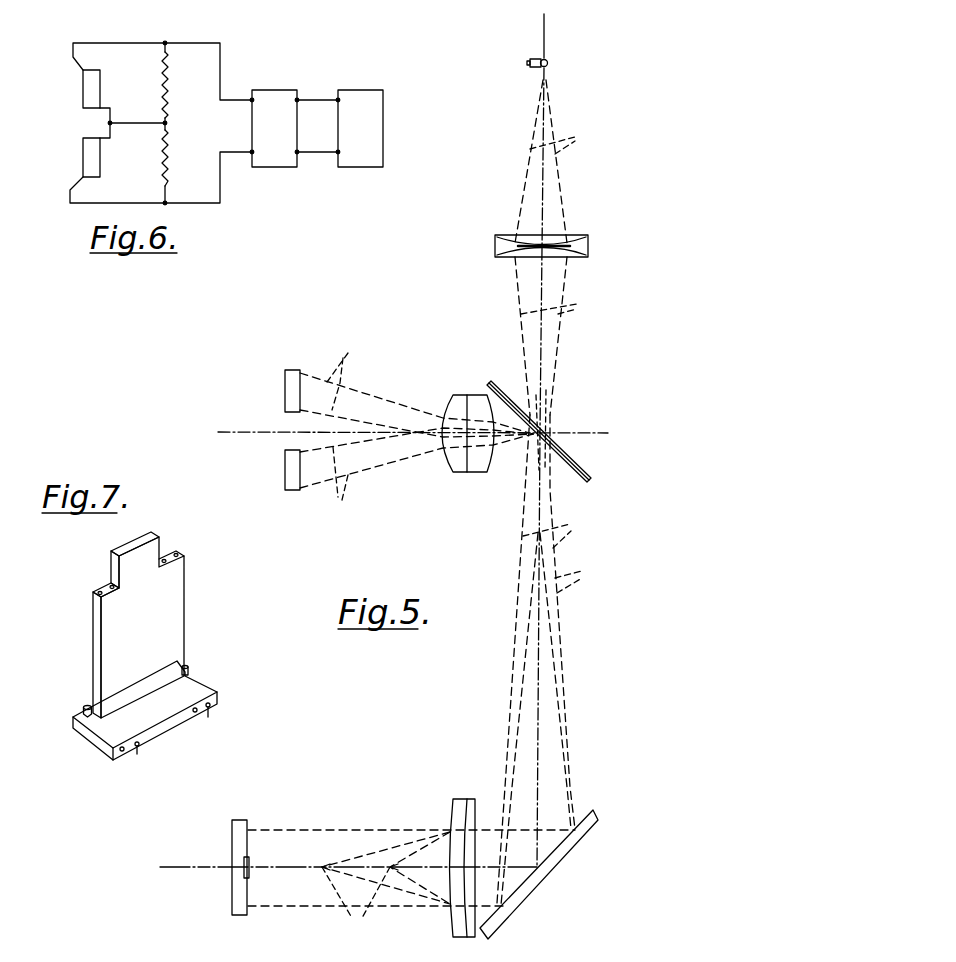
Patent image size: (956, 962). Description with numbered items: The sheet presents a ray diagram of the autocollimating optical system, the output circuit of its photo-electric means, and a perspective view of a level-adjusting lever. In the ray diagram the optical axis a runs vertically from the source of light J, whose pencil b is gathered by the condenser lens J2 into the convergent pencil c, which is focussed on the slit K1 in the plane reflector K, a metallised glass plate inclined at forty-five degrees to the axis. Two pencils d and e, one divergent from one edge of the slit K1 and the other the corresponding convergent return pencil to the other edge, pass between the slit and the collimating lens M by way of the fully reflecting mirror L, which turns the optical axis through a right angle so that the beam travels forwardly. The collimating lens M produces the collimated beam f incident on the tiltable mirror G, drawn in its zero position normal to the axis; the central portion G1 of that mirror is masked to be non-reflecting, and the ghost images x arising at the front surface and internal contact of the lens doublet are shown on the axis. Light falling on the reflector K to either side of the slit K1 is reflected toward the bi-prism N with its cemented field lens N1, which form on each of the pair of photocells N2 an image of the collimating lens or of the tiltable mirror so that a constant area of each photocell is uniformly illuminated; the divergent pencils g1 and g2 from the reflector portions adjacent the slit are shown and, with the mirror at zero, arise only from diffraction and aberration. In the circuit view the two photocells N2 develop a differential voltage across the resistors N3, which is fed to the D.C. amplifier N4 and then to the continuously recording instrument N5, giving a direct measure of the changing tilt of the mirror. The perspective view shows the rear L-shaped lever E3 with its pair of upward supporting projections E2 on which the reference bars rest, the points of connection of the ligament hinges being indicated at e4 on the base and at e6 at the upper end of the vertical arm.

In FIG. 6, the photocells N2 is at (83, 91).
In FIG. 5, the photocells N2 is at (288, 370).
In FIG. 6, the resistors N3 is at (168, 85).
In FIG. 6, the D.C. amplifier N4 is at (270, 92).
In FIG. 6, the continuously recording instrument N5 is at (363, 97).
In FIG. 7, the supporting projections E2 is at (85, 709).
In FIG. 7, the L-shaped lever E3 is at (175, 643).
In FIG. 7, the point of connection of ligament hinges E4 e4 is at (124, 751).
In FIG. 7, the point of connection of ligament hinges E6 e6 is at (140, 559).
In FIG. 5, the optical axis a is at (566, 38).
In FIG. 5, the source of light J is at (550, 62).
In FIG. 5, the condenser lens J2 is at (589, 243).
In FIG. 5, the pencil from the source b is at (559, 140).
In FIG. 5, the convergent pencil c is at (555, 304).
In FIG. 5, the pencil d is at (575, 579).
In FIG. 5, the pencil e is at (553, 530).
In FIG. 5, the plane reflector K is at (589, 468).
In FIG. 5, the slit K1 is at (531, 440).
In FIG. 5, the bi-prism N is at (473, 398).
In FIG. 5, the field lens N1 is at (450, 403).
In FIG. 5, the divergent pencil g1 is at (344, 371).
In FIG. 5, the divergent pencil g2 is at (338, 483).
In FIG. 5, the collimating lens M is at (462, 800).
In FIG. 5, the fully reflecting mirror L is at (588, 810).
In FIG. 5, the tiltable mirror G is at (240, 820).
In FIG. 5, the masked central portion G1 is at (249, 862).
In FIG. 5, the collimated beam f is at (300, 830).
In FIG. 5, the ghost images x is at (386, 884).